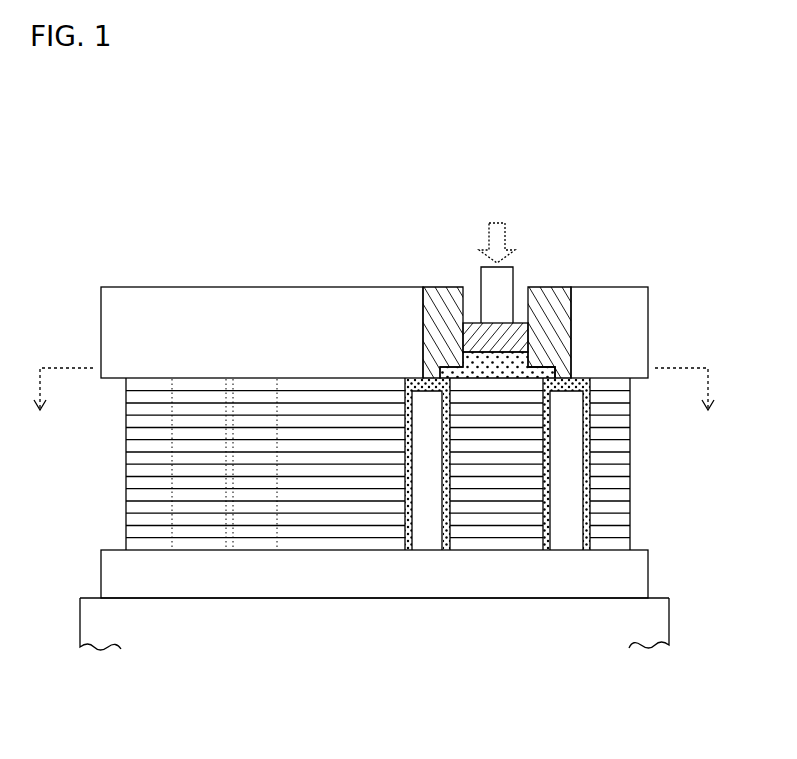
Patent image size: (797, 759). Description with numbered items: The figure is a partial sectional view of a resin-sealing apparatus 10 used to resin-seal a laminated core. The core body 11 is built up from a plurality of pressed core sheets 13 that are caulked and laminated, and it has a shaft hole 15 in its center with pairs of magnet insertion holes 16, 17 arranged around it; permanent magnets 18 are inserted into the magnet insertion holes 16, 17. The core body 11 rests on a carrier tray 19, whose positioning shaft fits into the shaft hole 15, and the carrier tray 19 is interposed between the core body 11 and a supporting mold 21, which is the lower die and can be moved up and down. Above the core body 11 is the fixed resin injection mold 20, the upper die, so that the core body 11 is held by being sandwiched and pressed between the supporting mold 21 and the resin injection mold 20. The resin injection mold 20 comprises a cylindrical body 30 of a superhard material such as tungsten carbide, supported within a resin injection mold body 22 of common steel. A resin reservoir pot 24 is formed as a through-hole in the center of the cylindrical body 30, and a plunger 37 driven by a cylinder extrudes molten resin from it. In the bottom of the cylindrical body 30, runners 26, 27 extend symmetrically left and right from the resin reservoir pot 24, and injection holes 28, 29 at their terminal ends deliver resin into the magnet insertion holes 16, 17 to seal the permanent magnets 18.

The resin-sealing apparatus 10 is at (672, 210).
The resin injection mold 20 is at (138, 283).
The resin injection mold body 22 is at (219, 308).
The resin reservoir pot 24 is at (466, 350).
The runner 26 is at (445, 355).
The injection hole 28 is at (435, 365).
The plunger 37 is at (522, 310).
The cylindrical body 30 is at (545, 365).
The runner 27 is at (650, 287).
The shaft hole 15 is at (314, 530).
The core body 11 is at (637, 483).
The core sheet 13 is at (620, 525).
The magnet insertion hole 16 is at (443, 520).
The magnet insertion hole 17 is at (590, 520).
The permanent magnet 18 is at (428, 522).
The injection hole 29 is at (560, 385).
The carrier tray 19 is at (240, 575).
The supporting mold 21 is at (640, 625).